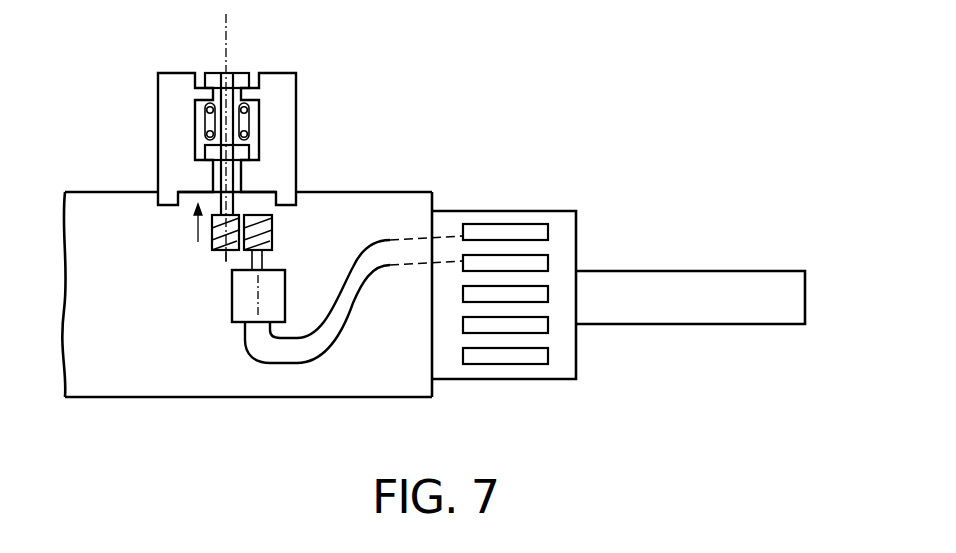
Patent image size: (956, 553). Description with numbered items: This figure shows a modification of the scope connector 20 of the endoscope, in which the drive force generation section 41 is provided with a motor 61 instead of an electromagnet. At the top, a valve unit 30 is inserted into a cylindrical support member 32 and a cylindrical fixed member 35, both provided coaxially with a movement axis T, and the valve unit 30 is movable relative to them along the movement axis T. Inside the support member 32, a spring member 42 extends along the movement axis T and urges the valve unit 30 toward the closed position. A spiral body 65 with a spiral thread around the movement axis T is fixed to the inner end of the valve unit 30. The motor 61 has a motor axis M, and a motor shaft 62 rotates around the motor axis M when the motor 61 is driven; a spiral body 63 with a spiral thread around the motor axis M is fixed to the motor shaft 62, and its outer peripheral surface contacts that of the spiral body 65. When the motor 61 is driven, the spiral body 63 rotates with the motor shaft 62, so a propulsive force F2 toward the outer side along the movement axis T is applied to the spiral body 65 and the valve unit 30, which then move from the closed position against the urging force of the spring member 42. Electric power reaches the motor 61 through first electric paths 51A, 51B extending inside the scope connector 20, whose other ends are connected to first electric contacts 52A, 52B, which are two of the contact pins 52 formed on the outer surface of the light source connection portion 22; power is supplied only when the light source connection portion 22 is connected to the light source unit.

The scope connector 20 is at (343, 388).
The light source connection portion 22 is at (560, 215).
The valve unit 30 is at (244, 69).
The support member 32 is at (275, 139).
The fixed member 35 is at (288, 89).
The drive force generation section 41 is at (242, 305).
The spring member 42 is at (244, 135).
The first electric path 51A is at (353, 263).
The first electric path 51B is at (357, 327).
The contact pins 52 is at (552, 294).
The first electric contact 52A is at (495, 232).
The first electric contact 52B is at (542, 265).
The motor 61 is at (235, 313).
The motor shaft 62 is at (265, 258).
The spiral body 63 is at (273, 230).
The spiral body 65 is at (212, 248).
The propulsive force F2 is at (185, 223).
The motor axis M is at (258, 293).
The movement axis T is at (224, 22).